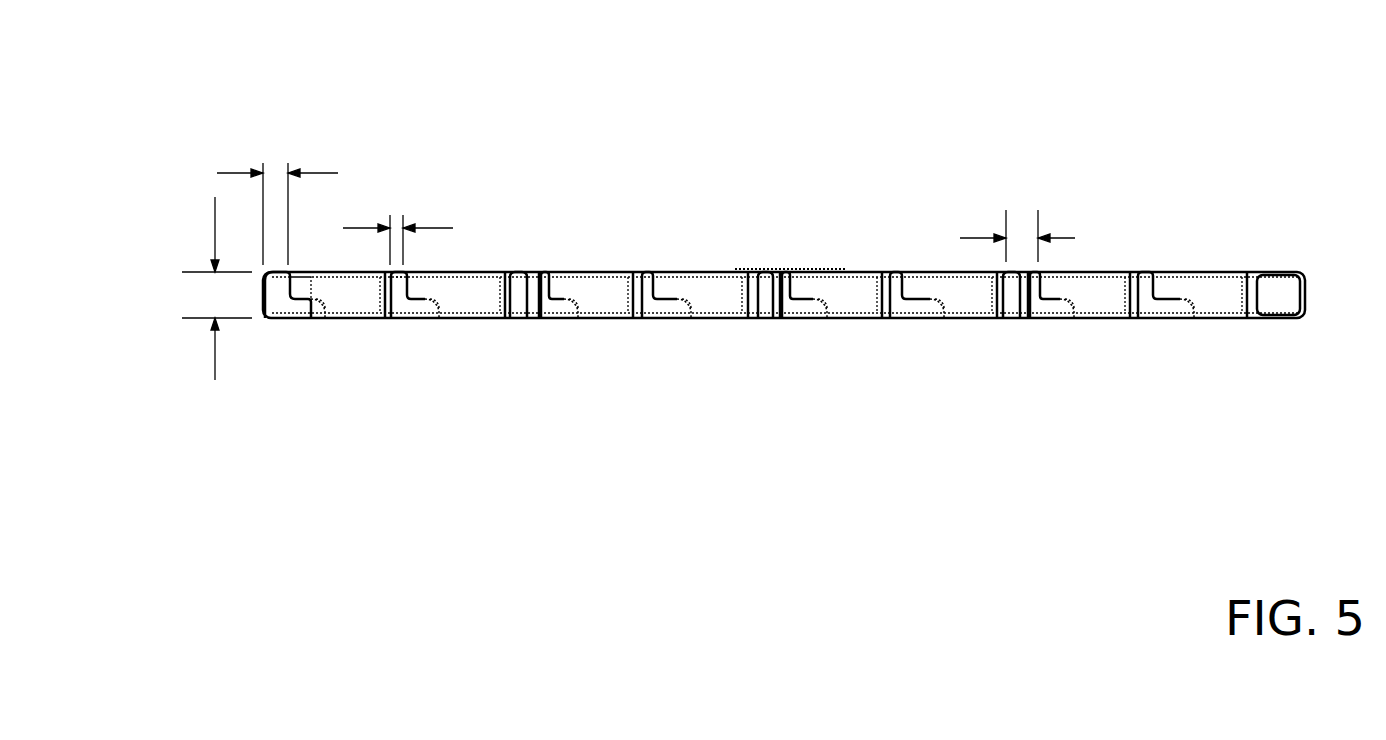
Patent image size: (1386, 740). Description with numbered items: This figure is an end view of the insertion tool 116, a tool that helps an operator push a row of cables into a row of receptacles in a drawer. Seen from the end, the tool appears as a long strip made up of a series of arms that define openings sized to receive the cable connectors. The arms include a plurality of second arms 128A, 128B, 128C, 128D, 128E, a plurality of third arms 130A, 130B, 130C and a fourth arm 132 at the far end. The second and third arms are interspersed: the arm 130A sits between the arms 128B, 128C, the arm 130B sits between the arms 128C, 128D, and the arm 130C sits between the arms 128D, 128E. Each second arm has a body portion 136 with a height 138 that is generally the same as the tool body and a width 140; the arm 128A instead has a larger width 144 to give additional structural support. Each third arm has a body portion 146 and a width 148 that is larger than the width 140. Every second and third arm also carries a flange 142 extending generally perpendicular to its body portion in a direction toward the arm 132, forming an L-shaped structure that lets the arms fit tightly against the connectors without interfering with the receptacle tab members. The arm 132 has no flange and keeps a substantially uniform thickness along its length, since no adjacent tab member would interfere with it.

The insertion tool 116 is at (516, 96).
The second arm 128A is at (275, 320).
The second arm 128B is at (415, 320).
The second arm 128C is at (657, 320).
The second arm 128D is at (912, 320).
The second arm 128E is at (1160, 318).
The third arm 130A is at (528, 320).
The third arm 130B is at (775, 320).
The third arm 130C is at (1018, 320).
The fourth arm 132 is at (1272, 320).
The body portion 136 is at (378, 320).
The height 138 is at (213, 350).
The width 140 is at (428, 228).
The flange 142 is at (313, 298).
The width 144 is at (233, 173).
The body portion 146 is at (738, 320).
The width 148 is at (1064, 238).